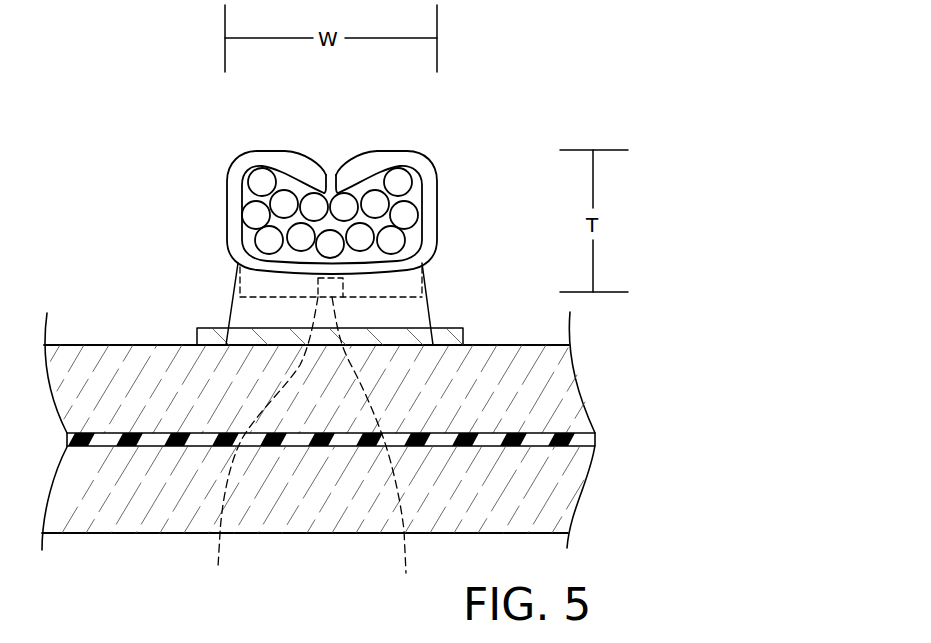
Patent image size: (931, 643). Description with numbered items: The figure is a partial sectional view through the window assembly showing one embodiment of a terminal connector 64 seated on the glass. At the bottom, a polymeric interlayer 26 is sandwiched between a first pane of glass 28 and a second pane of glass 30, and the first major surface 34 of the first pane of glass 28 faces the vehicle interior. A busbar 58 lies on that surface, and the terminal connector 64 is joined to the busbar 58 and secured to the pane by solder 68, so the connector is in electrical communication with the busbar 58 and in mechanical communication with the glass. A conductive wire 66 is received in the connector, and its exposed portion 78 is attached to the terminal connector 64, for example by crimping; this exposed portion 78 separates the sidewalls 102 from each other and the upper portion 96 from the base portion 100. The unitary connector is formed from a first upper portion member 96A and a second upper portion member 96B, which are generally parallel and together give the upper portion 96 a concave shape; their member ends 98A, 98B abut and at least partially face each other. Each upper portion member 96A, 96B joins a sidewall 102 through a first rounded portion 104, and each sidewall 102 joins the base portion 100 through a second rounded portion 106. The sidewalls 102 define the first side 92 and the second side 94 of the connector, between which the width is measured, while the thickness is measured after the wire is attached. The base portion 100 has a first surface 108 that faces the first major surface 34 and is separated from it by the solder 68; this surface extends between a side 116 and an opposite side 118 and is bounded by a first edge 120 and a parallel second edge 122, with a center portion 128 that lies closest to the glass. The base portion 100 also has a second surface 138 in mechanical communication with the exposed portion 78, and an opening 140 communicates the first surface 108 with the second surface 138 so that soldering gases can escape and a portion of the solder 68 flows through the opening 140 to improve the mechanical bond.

The polymeric interlayer 26 is at (583, 442).
The first pane of glass 28 is at (557, 388).
The second pane of glass 30 is at (562, 502).
The first major surface 34 is at (78, 345).
The busbar 58 is at (463, 340).
The terminal connector 64 is at (413, 152).
The conductive wire 66 is at (240, 192).
The solder 68 is at (427, 287).
The exposed portion 78 is at (253, 213).
The first side 92 is at (244, 186).
The second side 94 is at (436, 198).
The upper portion 96 is at (276, 156).
The first upper portion member 96A is at (290, 157).
The second upper portion member 96B is at (338, 170).
The member end 98A is at (325, 170).
The member end 98B is at (333, 168).
The base portion 100 is at (428, 252).
The sidewall 102 is at (232, 172).
The first rounded portion 104 is at (236, 185).
The second rounded portion 106 is at (270, 240).
The first surface 108 is at (250, 297).
The side 116 is at (423, 264).
The side 118 is at (238, 267).
The first edge 120 is at (427, 308).
The second edge 122 is at (227, 312).
The center portion 128 is at (259, 449).
The second surface 138 is at (420, 210).
The opening 140 is at (379, 449).